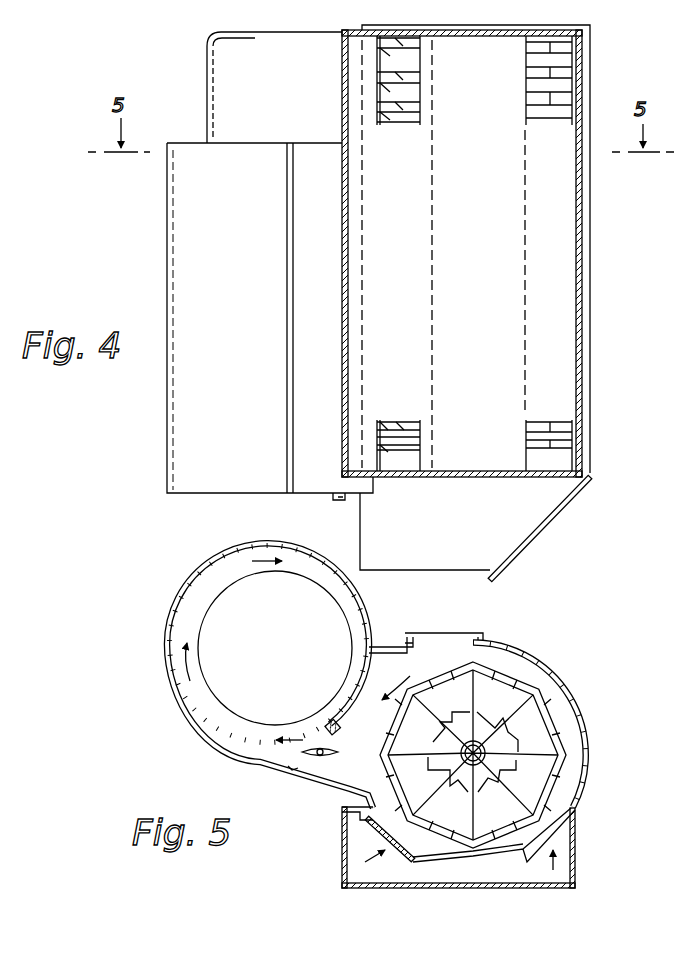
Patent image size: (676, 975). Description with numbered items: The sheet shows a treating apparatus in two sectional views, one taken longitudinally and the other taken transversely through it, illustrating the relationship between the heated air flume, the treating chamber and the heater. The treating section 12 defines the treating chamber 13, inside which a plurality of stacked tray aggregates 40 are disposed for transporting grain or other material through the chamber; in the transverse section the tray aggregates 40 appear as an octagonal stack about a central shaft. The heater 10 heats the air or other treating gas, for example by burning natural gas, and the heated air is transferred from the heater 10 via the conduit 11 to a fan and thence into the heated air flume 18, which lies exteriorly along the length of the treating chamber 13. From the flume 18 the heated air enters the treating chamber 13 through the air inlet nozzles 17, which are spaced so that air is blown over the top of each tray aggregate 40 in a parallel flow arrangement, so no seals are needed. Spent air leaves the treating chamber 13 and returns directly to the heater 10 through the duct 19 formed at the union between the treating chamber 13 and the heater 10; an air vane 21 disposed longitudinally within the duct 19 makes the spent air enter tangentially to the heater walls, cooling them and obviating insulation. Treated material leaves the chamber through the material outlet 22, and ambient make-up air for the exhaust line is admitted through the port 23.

In FIG. 5, the heater 10 is at (180, 711).
In FIG. 4, the conduit 11 is at (332, 498).
In FIG. 4, the treating section 12 is at (596, 52).
In FIG. 5, the treating chamber 13 is at (574, 792).
In FIG. 4, the air inlet nozzles 17 is at (560, 114).
In FIG. 5, the air inlet nozzles 17 is at (356, 838).
In FIG. 4, the heated air flume 18 is at (508, 265).
In FIG. 5, the heated air flume 18 is at (343, 860).
In FIG. 5, the duct 19 is at (320, 730).
In FIG. 5, the air vane 21 is at (318, 760).
In FIG. 4, the material outlet 22 is at (563, 513).
In FIG. 5, the port 23 is at (462, 632).
In FIG. 5, the tray aggregates 40 is at (538, 730).